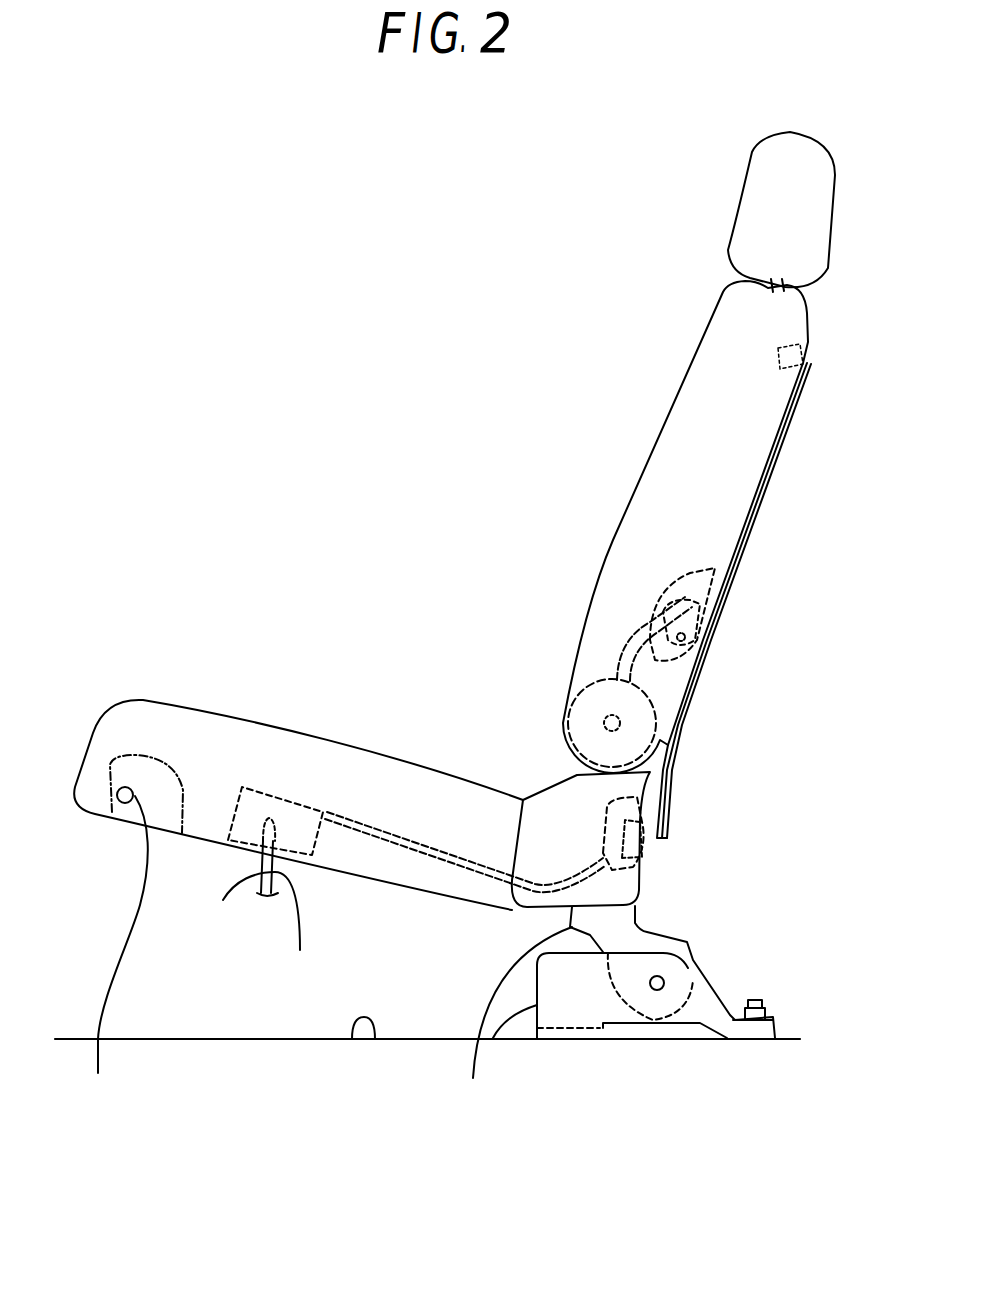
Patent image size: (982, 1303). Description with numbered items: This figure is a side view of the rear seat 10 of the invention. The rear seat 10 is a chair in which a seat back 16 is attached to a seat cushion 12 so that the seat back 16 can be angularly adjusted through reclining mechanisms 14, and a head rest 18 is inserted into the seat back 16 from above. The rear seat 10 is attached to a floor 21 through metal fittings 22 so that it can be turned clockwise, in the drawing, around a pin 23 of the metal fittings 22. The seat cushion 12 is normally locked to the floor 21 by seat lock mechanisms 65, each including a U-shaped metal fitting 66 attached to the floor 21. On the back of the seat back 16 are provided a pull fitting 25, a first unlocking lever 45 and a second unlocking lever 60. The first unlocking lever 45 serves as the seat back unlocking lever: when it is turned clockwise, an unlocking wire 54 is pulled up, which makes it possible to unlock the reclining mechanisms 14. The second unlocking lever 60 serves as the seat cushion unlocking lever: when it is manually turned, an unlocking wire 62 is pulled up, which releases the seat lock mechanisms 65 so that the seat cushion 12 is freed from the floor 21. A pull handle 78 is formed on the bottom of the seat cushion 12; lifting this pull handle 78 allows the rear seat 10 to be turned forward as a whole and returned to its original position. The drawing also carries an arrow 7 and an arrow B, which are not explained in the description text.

The rear seat 10 is at (375, 280).
The seat cushion 12 is at (302, 738).
The reclining mechanisms 14 is at (564, 674).
The seat back 16 is at (630, 493).
The head rest 18 is at (735, 211).
The floor 21 is at (375, 1039).
The metal fittings 22 is at (473, 1078).
The pin 23 is at (664, 981).
The pull fitting 25 is at (750, 517).
The first unlocking lever 45 is at (697, 605).
The unlocking wire 54 is at (630, 643).
The second unlocking lever 60 is at (643, 853).
The unlocking wire 62 is at (407, 835).
The seat lock mechanisms 65 is at (233, 886).
The U-shaped metal fitting 66 is at (300, 950).
The direction arrow 7 is at (323, 895).
The pull handle 78 is at (98, 1073).
The direction of movement B is at (780, 643).